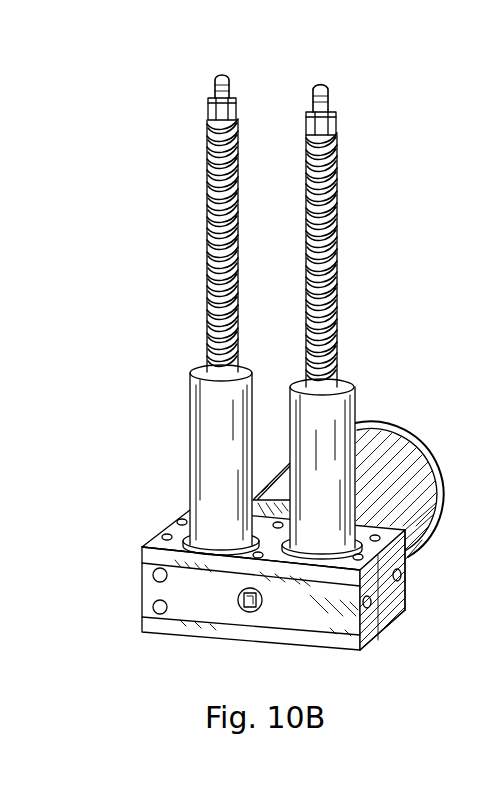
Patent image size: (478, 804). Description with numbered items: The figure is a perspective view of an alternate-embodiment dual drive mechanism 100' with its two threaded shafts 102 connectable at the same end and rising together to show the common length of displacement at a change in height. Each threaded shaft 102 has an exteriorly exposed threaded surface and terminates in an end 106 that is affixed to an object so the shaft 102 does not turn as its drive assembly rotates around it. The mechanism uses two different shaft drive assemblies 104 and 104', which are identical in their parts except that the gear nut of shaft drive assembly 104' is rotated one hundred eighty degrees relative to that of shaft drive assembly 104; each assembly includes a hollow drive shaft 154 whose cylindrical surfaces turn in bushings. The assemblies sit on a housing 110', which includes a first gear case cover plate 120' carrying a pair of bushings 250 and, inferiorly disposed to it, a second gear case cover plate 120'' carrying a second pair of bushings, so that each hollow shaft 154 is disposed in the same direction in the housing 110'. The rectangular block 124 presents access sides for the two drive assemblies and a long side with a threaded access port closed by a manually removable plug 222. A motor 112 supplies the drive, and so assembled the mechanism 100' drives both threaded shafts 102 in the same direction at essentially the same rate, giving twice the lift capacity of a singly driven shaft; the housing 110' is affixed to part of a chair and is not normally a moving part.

The dual drive mechanism 100' is at (352, 51).
The end 106 is at (307, 118).
The threaded shaft 102 is at (302, 263).
The hollow drive shaft 154 is at (285, 388).
The shaft drive assembly 104' is at (213, 427).
The shaft drive assembly 104 is at (340, 466).
The motor 112 is at (393, 462).
The housing 110' is at (271, 579).
The block 124 is at (144, 588).
The bushing 250 is at (205, 554).
The plug 222 is at (238, 608).
The first gear case cover plate 120' is at (432, 570).
The second gear case cover plate 120'' is at (396, 634).